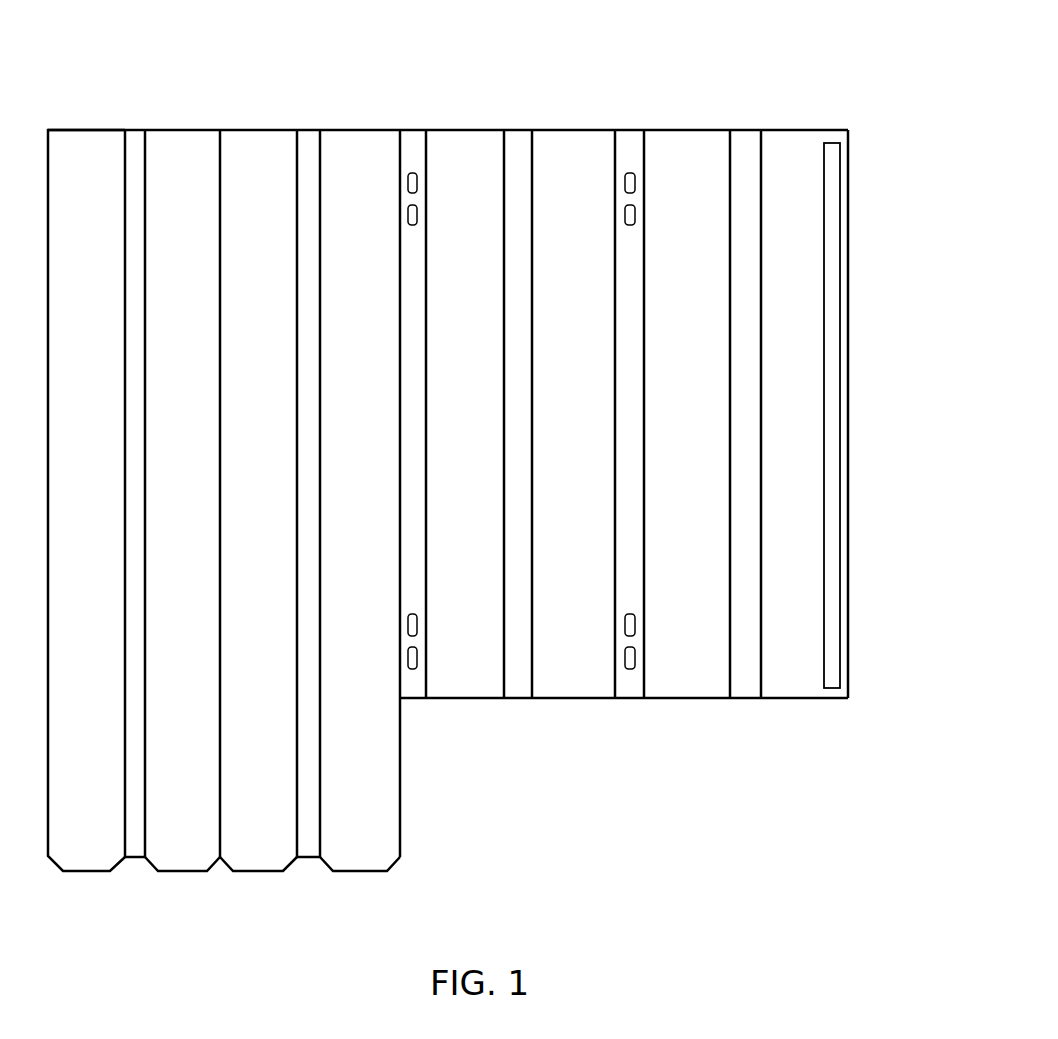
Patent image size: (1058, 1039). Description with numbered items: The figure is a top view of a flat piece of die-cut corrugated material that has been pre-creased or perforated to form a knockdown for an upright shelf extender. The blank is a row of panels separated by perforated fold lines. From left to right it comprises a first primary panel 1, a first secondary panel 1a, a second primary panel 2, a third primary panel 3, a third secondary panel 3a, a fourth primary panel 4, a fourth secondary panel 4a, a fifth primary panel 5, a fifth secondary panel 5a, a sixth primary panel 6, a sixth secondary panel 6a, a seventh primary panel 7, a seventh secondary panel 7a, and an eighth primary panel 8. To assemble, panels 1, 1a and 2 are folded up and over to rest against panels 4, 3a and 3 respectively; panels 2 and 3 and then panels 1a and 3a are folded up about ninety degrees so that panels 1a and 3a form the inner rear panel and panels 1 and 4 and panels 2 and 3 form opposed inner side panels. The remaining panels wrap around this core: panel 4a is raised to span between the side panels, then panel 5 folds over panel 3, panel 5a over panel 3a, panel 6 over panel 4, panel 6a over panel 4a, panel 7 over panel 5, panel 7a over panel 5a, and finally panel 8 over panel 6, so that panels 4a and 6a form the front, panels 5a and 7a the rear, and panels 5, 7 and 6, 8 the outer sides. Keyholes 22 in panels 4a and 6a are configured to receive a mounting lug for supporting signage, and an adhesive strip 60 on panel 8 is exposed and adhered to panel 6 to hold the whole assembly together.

The first primary panel 1 is at (84, 251).
The second primary panel 2 is at (180, 251).
The third primary panel 3 is at (257, 251).
The fourth primary panel 4 is at (357, 251).
The fifth primary panel 5 is at (460, 251).
The sixth primary panel 6 is at (572, 251).
The seventh primary panel 7 is at (684, 251).
The eighth primary panel 8 is at (814, 251).
The first secondary panel 1a is at (137, 142).
The third secondary panel 3a is at (313, 133).
The fourth secondary panel 4a is at (418, 142).
The fifth secondary panel 5a is at (518, 150).
The sixth secondary panel 6a is at (628, 145).
The seventh secondary panel 7a is at (749, 158).
The keyhole 22 is at (418, 623).
The adhesive strip 60 is at (833, 186).